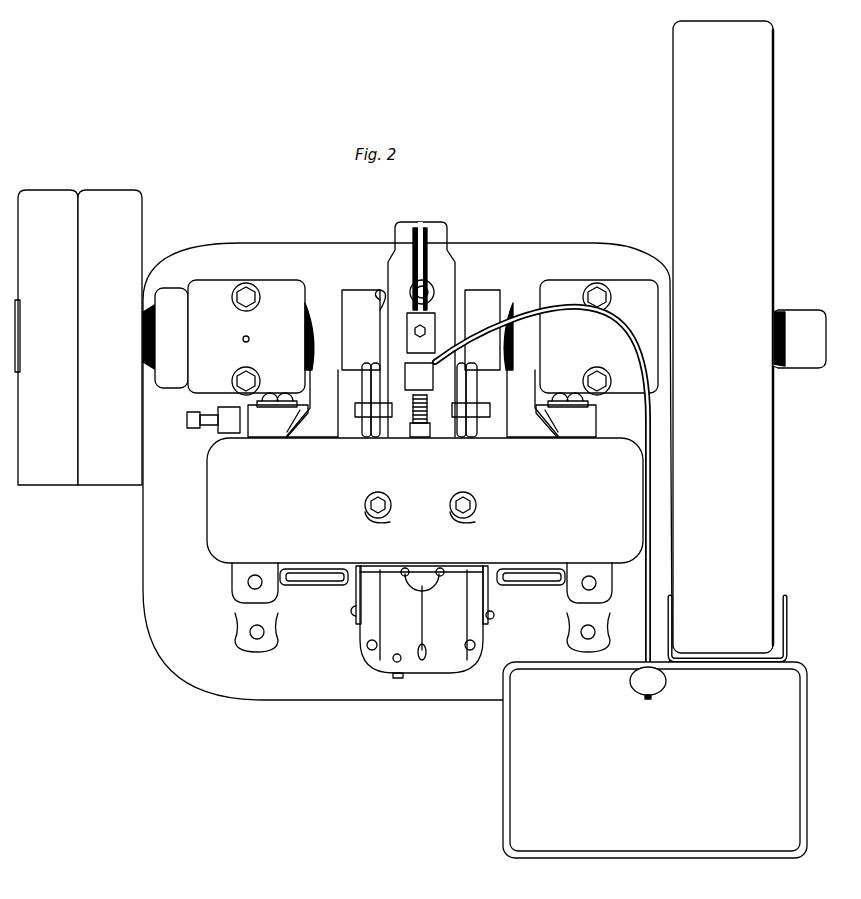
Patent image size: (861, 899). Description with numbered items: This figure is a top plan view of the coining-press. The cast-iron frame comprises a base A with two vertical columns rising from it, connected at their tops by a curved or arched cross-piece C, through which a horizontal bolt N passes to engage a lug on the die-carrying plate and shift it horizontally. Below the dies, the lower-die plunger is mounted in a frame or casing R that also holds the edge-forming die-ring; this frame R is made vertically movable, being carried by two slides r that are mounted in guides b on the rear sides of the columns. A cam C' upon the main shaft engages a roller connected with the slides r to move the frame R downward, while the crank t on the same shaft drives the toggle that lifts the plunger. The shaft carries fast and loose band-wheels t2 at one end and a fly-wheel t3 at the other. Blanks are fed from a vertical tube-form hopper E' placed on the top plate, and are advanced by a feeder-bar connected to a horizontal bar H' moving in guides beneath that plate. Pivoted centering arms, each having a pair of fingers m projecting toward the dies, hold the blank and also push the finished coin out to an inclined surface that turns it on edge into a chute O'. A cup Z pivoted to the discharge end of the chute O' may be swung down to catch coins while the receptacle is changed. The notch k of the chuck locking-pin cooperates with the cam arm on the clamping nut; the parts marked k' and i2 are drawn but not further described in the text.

The base A is at (407, 471).
The fast and loose band-wheels t2 is at (101, 337).
The fly-wheel t3 is at (748, 340).
The frame or casing R is at (422, 403).
The guides b is at (391, 415).
The slides r is at (422, 421).
The bolts i2 is at (380, 410).
The cam C' is at (432, 329).
The crank t is at (386, 296).
The fingers m is at (420, 351).
The horizontal bolt N is at (422, 572).
The chute or passage O' is at (550, 484).
The cross-piece C is at (425, 500).
The screws O is at (420, 495).
The hook bracket k' is at (290, 607).
The slot or notch k is at (554, 607).
The horizontal bar H' is at (500, 615).
The hopper E' is at (419, 622).
The cup Z is at (655, 760).